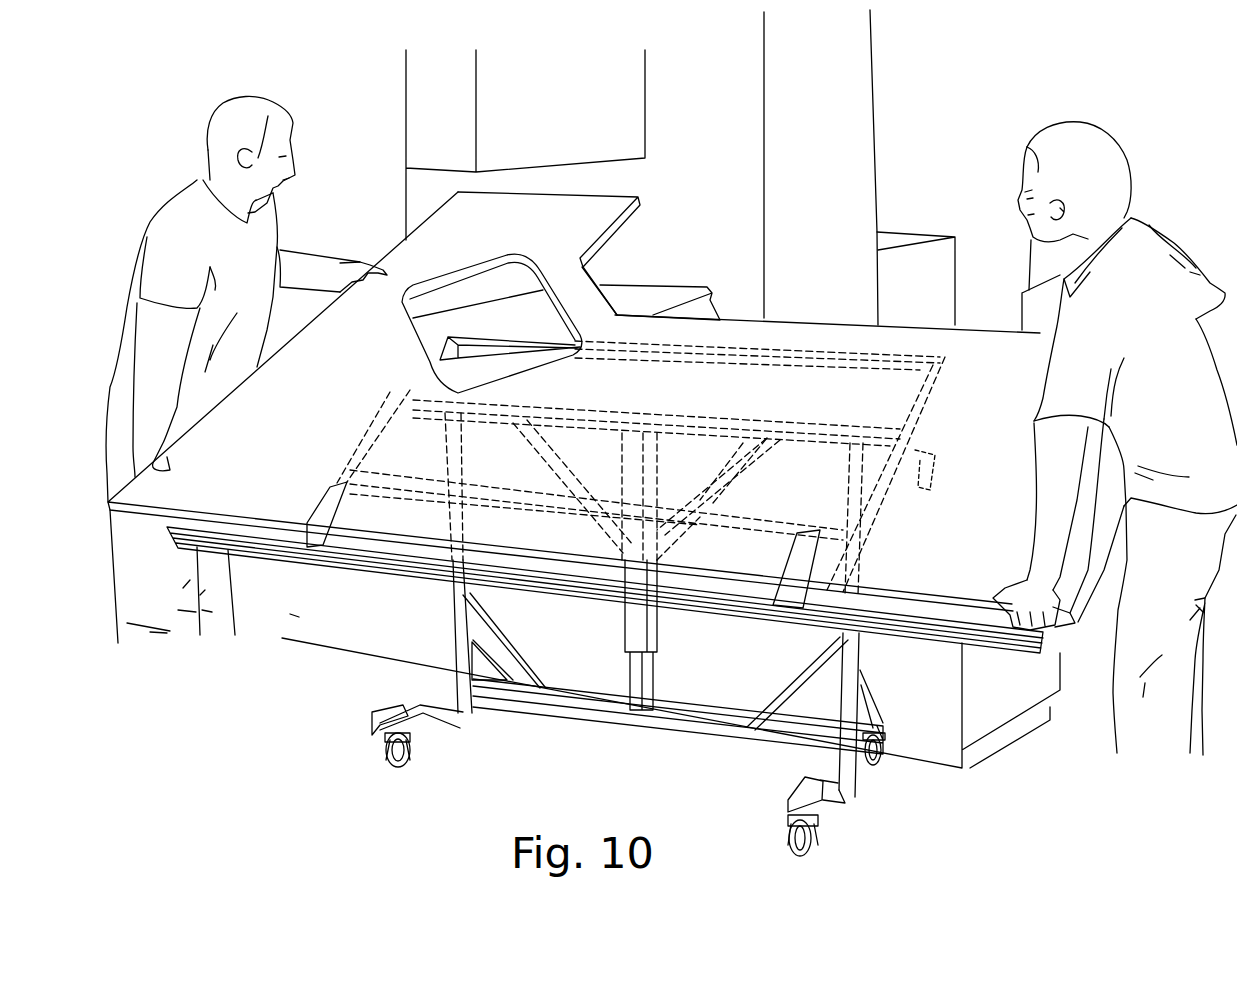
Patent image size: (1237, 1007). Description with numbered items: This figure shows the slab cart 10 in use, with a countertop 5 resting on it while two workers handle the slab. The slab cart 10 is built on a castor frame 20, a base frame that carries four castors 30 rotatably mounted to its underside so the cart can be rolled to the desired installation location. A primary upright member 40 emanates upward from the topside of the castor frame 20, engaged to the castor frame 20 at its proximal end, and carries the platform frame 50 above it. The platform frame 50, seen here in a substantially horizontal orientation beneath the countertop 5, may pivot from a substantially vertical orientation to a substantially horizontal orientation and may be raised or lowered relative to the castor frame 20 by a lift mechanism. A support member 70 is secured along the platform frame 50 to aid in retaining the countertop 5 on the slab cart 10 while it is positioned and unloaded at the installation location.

The countertop 5 is at (608, 205).
The slab cart 10 is at (320, 688).
The castor frame 20 is at (628, 717).
The castors 30 is at (413, 762).
The primary upright member 40 is at (628, 623).
The platform frame 50 is at (383, 433).
The support member 70 is at (383, 563).